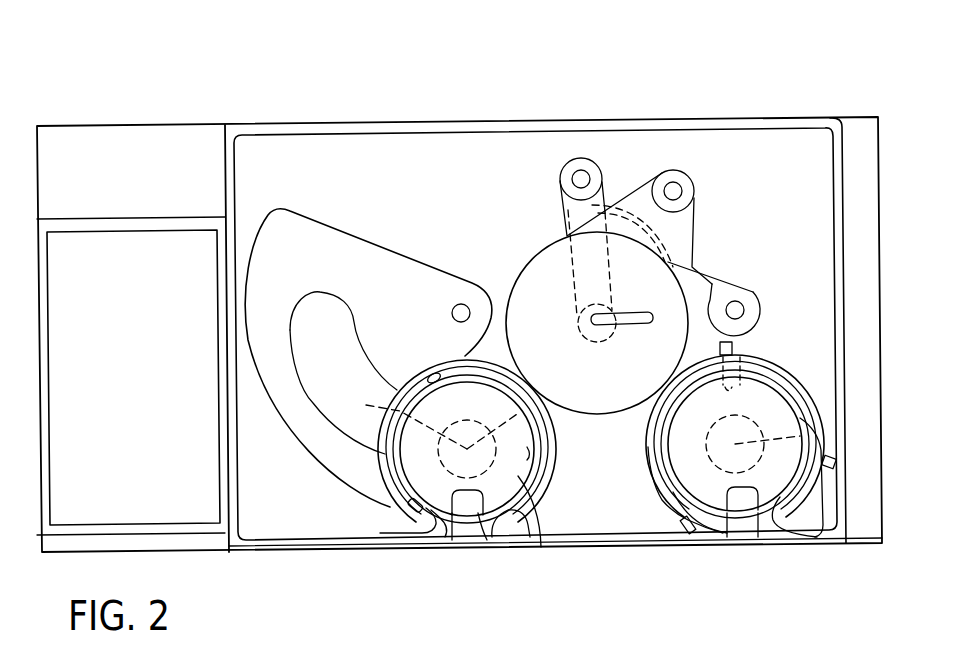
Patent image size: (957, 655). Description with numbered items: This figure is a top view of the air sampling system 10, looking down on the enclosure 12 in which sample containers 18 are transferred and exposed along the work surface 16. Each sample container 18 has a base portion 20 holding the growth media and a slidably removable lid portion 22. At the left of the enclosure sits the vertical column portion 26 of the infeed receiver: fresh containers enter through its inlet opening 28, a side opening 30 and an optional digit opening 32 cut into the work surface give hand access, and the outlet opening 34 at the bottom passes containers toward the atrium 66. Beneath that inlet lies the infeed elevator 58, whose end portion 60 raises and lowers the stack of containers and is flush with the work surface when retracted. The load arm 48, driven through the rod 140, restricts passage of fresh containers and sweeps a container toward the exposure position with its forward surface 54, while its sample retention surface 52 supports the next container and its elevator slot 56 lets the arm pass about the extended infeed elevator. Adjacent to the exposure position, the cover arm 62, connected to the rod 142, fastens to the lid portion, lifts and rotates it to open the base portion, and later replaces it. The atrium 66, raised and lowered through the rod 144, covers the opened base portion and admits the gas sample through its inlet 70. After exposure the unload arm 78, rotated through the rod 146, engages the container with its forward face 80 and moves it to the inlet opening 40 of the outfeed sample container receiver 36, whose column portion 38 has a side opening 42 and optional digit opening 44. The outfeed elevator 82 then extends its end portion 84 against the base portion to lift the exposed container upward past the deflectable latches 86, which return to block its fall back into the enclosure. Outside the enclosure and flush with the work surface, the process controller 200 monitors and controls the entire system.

The air sampling system 10 is at (795, 25).
The enclosure 12 is at (744, 117).
The work surface 16 is at (786, 140).
The sample containers 18 is at (524, 480).
The base portion 20 is at (534, 464).
The lid portion 22 is at (548, 455).
The column portion 26 is at (537, 532).
The inlet opening 28 is at (530, 447).
The side opening 30 is at (452, 540).
The digit opening 32 is at (487, 540).
The outlet opening 34 is at (407, 500).
The outfeed sample container receiver 36 is at (642, 447).
The column portion 38 is at (660, 462).
The inlet opening 40 is at (788, 492).
The side opening 42 is at (784, 537).
The digit opening 44 is at (748, 520).
The load arm 48 is at (305, 218).
The sample retention surface 52 is at (388, 330).
The forward surface 54 is at (423, 368).
The elevator slot 56 is at (355, 343).
The infeed elevator 58 is at (540, 421).
The end portion 60 is at (402, 420).
The cover arm 62 is at (605, 194).
The atrium 66 is at (640, 292).
The inlet 70 is at (633, 327).
The unload arm 78 is at (752, 300).
The forward face 80 is at (690, 228).
The outfeed elevator 82 is at (752, 362).
The end portion 84 is at (812, 452).
The latches 86 is at (735, 346).
The rod 140 is at (461, 304).
The rod 142 is at (583, 166).
The rod 144 is at (683, 178).
The rod 146 is at (745, 314).
The process controller 200 is at (53, 377).